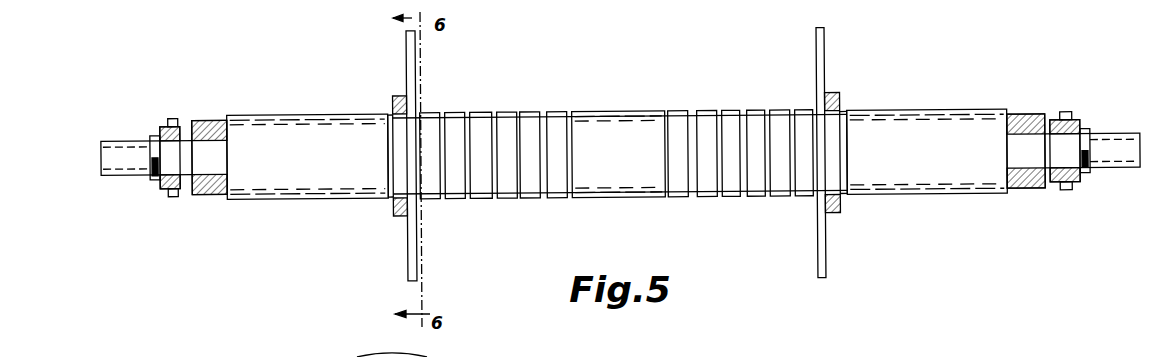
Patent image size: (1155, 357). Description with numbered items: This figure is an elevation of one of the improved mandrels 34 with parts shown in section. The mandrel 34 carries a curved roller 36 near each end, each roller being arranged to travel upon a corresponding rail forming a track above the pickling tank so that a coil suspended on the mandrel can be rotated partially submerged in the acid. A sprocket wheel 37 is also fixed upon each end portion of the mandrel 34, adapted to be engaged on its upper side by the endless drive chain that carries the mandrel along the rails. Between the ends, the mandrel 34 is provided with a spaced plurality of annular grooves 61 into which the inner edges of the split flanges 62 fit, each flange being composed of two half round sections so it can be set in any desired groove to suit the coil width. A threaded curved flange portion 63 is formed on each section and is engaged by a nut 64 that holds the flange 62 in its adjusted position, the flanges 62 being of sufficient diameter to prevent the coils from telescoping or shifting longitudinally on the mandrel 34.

The mandrel 34 is at (948, 112).
The curved roller 36 is at (206, 124).
The sprocket wheel 37 is at (171, 192).
The annular grooves 61 is at (515, 182).
The split flange 62 is at (415, 82).
The threaded curved flange portion 63 is at (401, 118).
The nut 64 is at (396, 218).